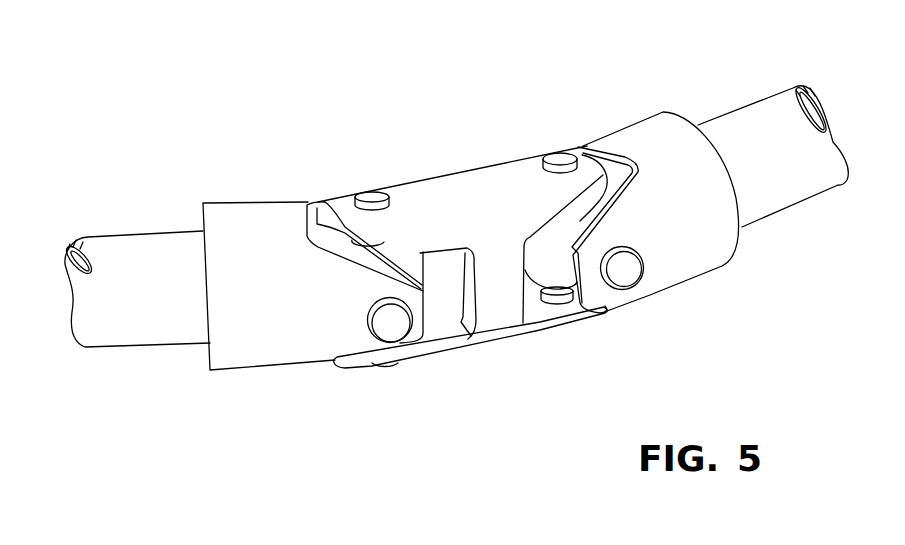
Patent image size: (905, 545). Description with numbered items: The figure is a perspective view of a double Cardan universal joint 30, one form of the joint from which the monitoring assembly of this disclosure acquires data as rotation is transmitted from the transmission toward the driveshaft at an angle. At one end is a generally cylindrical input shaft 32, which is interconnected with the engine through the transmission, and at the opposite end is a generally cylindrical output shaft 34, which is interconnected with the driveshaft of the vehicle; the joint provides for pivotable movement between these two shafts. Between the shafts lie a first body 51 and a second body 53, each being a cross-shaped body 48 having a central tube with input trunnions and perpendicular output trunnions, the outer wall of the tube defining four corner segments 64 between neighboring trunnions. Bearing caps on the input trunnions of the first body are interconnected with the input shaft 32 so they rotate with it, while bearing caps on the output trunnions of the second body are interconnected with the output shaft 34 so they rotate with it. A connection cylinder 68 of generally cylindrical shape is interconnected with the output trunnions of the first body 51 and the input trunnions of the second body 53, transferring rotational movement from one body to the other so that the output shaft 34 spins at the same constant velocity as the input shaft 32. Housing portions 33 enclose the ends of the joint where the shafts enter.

The double Cardan universal joint 30 is at (265, 369).
The input shaft 32 is at (138, 248).
The housing 33 is at (243, 222).
The output shaft 34 is at (775, 115).
The body 48 is at (556, 302).
The first body 51 is at (394, 260).
The second body 53 is at (556, 244).
The corner segment 64 is at (581, 221).
The connection cylinder 68 is at (490, 187).